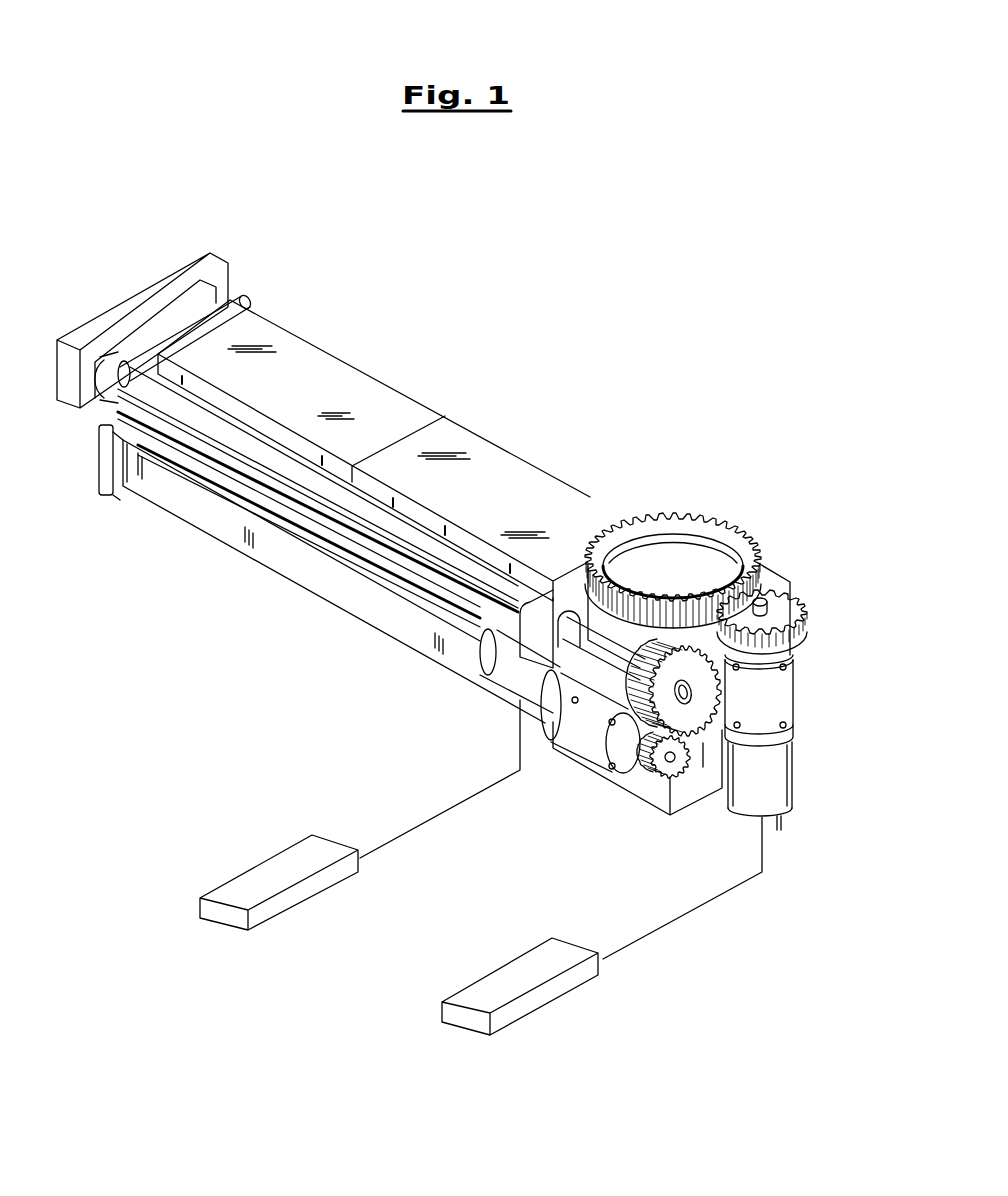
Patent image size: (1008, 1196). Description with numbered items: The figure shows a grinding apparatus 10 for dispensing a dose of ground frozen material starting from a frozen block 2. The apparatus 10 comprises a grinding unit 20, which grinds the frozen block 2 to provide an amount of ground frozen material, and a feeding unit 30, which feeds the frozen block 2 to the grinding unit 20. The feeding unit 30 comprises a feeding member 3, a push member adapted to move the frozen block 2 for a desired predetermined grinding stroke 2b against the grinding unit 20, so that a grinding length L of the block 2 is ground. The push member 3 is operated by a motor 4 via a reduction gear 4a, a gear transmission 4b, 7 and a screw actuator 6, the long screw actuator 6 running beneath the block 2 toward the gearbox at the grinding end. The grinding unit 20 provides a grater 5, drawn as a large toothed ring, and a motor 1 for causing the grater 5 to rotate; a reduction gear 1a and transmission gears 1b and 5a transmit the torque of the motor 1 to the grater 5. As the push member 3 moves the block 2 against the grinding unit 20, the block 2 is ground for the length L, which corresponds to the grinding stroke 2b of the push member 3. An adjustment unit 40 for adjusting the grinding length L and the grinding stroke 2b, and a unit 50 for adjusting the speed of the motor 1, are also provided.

The motor 1 is at (773, 768).
The reduction gear 1a is at (780, 705).
The transmission gear 1b is at (805, 615).
The frozen block 2 is at (473, 443).
The grinding stroke 2b is at (272, 298).
The feeding member 3 is at (226, 305).
The motor 4 is at (505, 690).
The reduction gear 4a is at (588, 732).
The gear transmission 4b is at (658, 767).
The grater 5 is at (718, 533).
The transmission gear 5a is at (757, 563).
The screw actuator 6 is at (230, 440).
The gear transmission 7 is at (683, 717).
The grinding apparatus 10 is at (527, 375).
The grinding unit 20 is at (678, 498).
The feeding unit 30 is at (168, 552).
The adjustment unit 40 is at (290, 872).
The unit for adjusting the speed of the motor 50 is at (508, 987).
The grinding length L is at (631, 506).